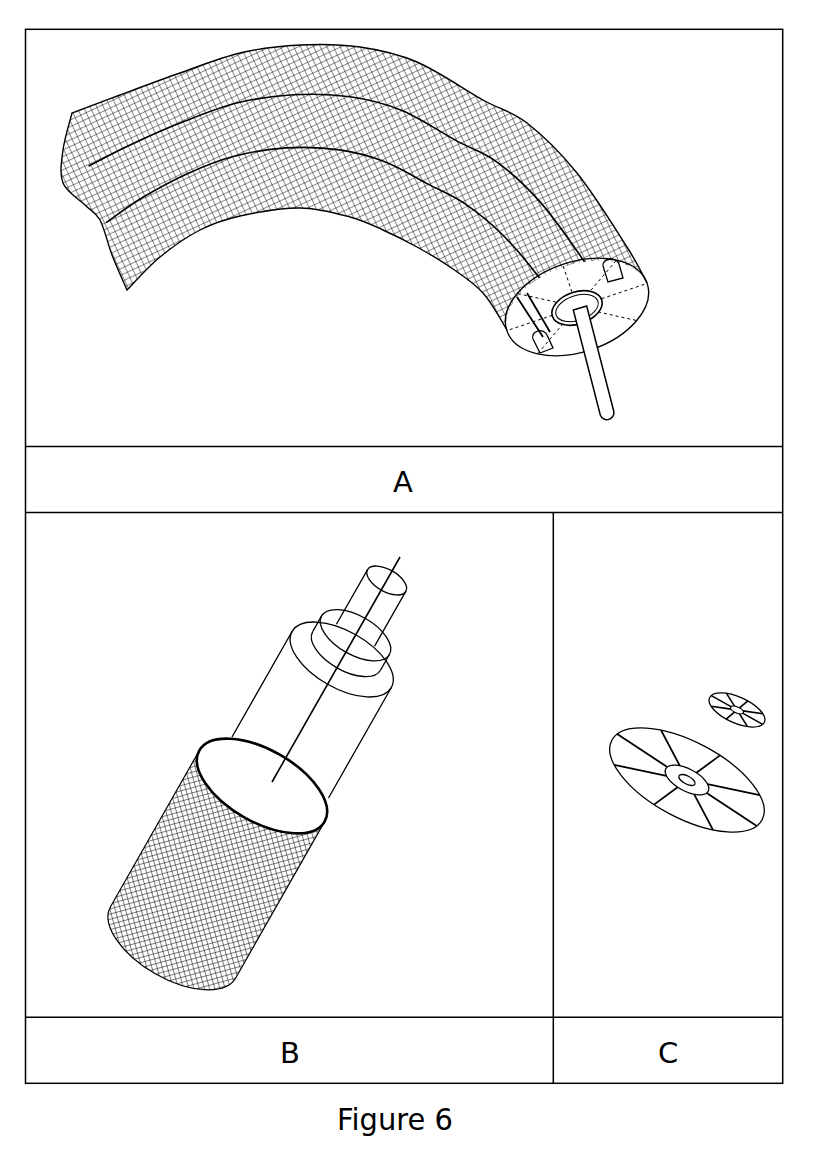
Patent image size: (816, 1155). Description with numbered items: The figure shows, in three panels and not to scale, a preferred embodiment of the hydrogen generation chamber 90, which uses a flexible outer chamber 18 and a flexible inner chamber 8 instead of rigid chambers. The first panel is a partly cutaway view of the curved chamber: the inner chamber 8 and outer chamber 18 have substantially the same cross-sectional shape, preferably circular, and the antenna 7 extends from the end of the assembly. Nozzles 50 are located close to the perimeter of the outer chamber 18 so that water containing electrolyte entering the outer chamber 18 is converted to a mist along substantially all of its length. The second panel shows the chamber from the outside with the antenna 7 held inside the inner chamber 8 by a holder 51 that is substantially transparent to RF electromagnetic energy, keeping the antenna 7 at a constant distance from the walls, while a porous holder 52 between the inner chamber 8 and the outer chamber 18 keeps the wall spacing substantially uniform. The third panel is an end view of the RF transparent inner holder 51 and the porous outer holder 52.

The antenna 7 is at (615, 392).
The inner chamber 8 is at (578, 275).
The outer chamber 18 is at (350, 225).
The nozzles 50 is at (617, 270).
The holder 51 is at (398, 628).
The porous holder 52 is at (257, 685).
The hydrogen generation chamber 90 is at (593, 120).